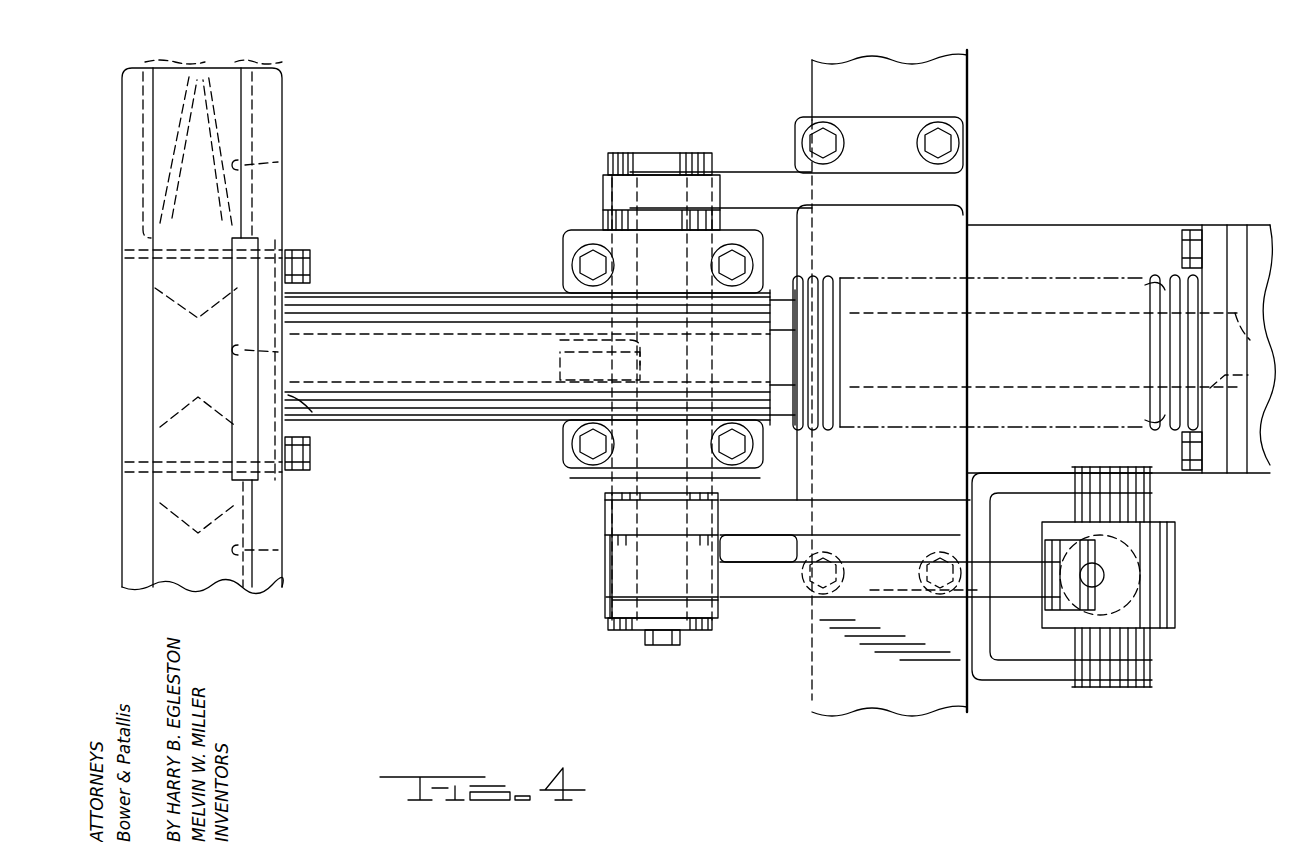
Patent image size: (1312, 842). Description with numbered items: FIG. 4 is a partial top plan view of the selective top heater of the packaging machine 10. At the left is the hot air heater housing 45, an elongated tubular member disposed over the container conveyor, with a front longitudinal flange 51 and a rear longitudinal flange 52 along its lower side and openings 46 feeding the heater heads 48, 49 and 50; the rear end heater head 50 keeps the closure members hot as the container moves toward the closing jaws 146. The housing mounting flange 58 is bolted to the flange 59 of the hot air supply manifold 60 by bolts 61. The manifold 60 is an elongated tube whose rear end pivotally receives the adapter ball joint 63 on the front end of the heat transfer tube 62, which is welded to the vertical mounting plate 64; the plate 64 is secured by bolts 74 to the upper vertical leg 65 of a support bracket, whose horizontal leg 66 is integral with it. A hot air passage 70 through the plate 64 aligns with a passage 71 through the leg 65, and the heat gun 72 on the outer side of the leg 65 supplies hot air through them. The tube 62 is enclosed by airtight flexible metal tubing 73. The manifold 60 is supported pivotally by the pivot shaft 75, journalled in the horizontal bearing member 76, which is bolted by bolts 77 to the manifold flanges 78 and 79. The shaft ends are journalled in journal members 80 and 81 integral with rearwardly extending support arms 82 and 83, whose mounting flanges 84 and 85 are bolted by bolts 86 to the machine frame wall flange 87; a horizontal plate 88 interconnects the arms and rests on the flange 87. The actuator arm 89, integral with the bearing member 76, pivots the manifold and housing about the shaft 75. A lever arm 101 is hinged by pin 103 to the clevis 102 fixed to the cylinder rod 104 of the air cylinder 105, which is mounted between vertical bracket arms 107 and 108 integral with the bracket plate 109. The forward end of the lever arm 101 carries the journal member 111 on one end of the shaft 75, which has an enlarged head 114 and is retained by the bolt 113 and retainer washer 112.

The frame 10 is at (292, 579).
The hot air heater housing 45 is at (270, 197).
The openings 46 is at (280, 160).
The heater head 48 is at (150, 512).
The heater head 49 is at (150, 395).
The heater head 50 is at (270, 114).
The front longitudinal flange 51 is at (135, 132).
The rear longitudinal flange 52 is at (272, 230).
The mounting flange 58 is at (258, 480).
The flange 59 is at (312, 412).
The hot air supply manifold 60 is at (470, 305).
The bolts 61 is at (305, 268).
The heat transfer tube 62 is at (1030, 312).
The adapter ball joint 63 is at (572, 333).
The vertical mounting plate 64 is at (1212, 232).
The upper vertical leg 65 is at (1238, 232).
The horizontal leg 66 is at (1028, 240).
The hot air passage 70 is at (1242, 377).
The hot air passage 71 is at (1254, 331).
The heat gun 72 is at (1262, 462).
The flexible metal tubing 73 is at (828, 280).
The bolts 74 is at (1185, 250).
The pivot shaft 75 is at (605, 190).
The bearing member 76 is at (591, 494).
The bolts 77 is at (585, 265).
The horizontal flange 78 is at (575, 250).
The horizontal flange 79 is at (575, 465).
The journal member 80 is at (610, 178).
The journal member 81 is at (616, 525).
The support arm 82 is at (750, 187).
The support arm 83 is at (762, 520).
The horizontal mounting flange 84 is at (900, 128).
The horizontal mounting flange 85 is at (895, 548).
The bolts 86 is at (835, 150).
The machine frame wall flange 87 is at (815, 680).
The horizontal plate 88 is at (800, 235).
The actuator arm 89 is at (562, 355).
The lever arm 101 is at (775, 600).
The clevis 102 is at (1045, 553).
The pin 103 is at (1078, 612).
The cylinder rod 104 is at (1105, 580).
The air cylinder 105 is at (1163, 643).
The bracket arm 107 is at (1012, 668).
The bracket arm 108 is at (1042, 485).
The vertical bracket plate 109 is at (980, 663).
The journal member 111 is at (606, 607).
The retainer washer 112 is at (612, 626).
The bolt 113 is at (668, 642).
The enlarged head 114 is at (680, 158).
The closing jaws 146 is at (250, 65).